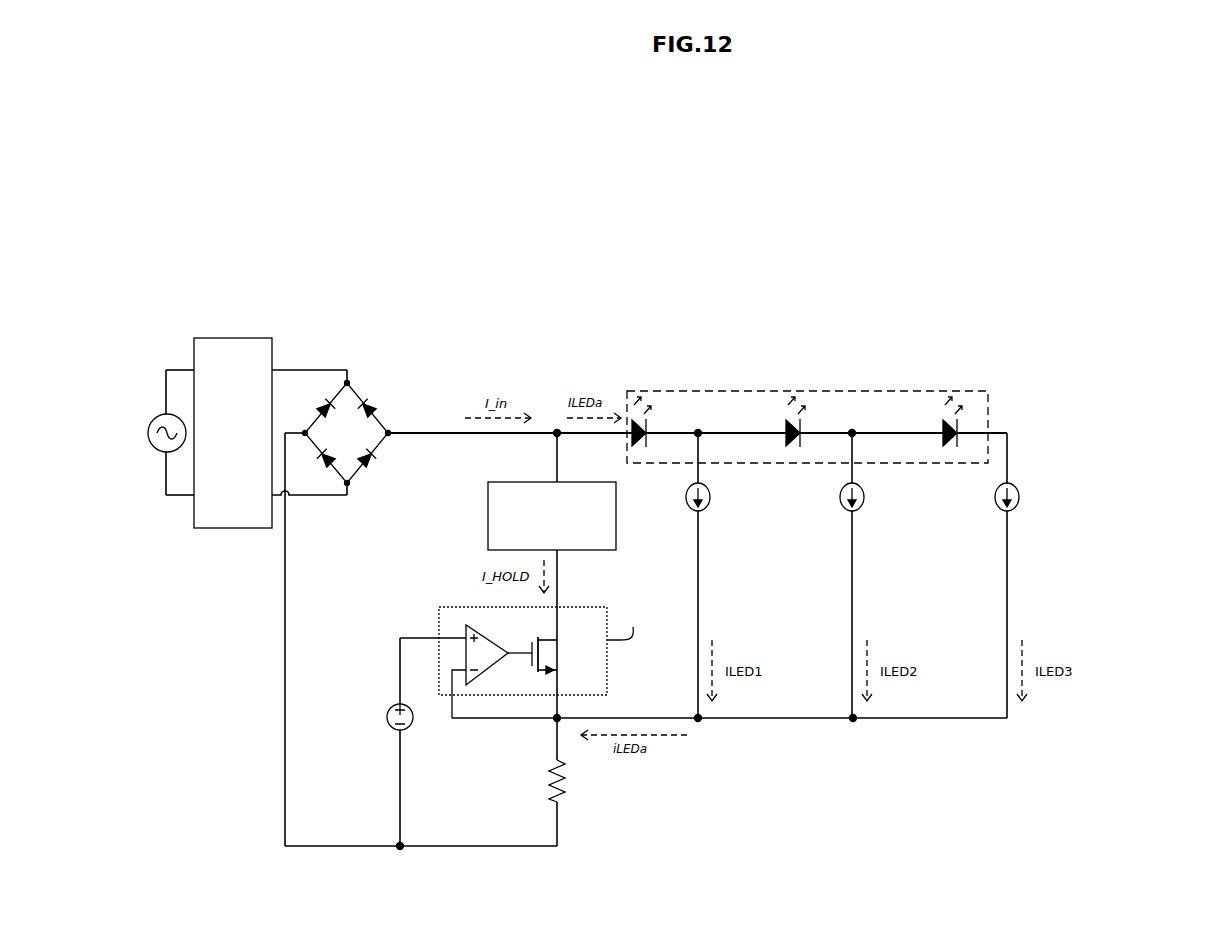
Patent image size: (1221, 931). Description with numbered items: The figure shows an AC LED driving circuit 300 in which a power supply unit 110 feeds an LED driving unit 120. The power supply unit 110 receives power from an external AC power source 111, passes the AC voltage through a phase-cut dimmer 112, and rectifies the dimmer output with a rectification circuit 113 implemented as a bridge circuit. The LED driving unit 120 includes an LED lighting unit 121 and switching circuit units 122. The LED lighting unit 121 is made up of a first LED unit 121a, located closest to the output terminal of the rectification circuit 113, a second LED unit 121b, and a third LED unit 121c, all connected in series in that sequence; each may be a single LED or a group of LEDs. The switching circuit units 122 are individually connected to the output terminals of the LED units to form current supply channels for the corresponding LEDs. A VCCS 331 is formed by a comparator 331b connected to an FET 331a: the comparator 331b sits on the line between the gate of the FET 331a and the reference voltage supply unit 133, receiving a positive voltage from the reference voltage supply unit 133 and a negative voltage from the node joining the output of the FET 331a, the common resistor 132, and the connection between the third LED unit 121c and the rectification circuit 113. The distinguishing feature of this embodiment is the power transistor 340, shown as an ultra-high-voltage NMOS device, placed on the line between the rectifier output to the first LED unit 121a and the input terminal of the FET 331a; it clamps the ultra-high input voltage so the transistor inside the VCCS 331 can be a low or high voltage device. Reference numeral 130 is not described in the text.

The AC LED driving circuit 300 is at (110, 145).
The power supply unit 110 is at (181, 288).
The AC power source 111 is at (147, 445).
The dimmer 112 is at (251, 338).
The rectification circuit 113 is at (338, 397).
The LED driving unit 120 is at (1055, 458).
The LED lighting unit 121 is at (843, 388).
The first LED unit 121a is at (645, 425).
The second LED unit 121b is at (800, 425).
The third LED unit 121c is at (958, 427).
The switching circuit units 122 is at (710, 497).
The holding current control unit 130 is at (388, 669).
The common resistor 132 is at (563, 792).
The reference voltage supply unit 133 is at (395, 730).
The VCCS 331 is at (607, 675).
The FET 331a is at (548, 627).
The comparator 331b is at (477, 622).
The power transistor 340 is at (488, 497).